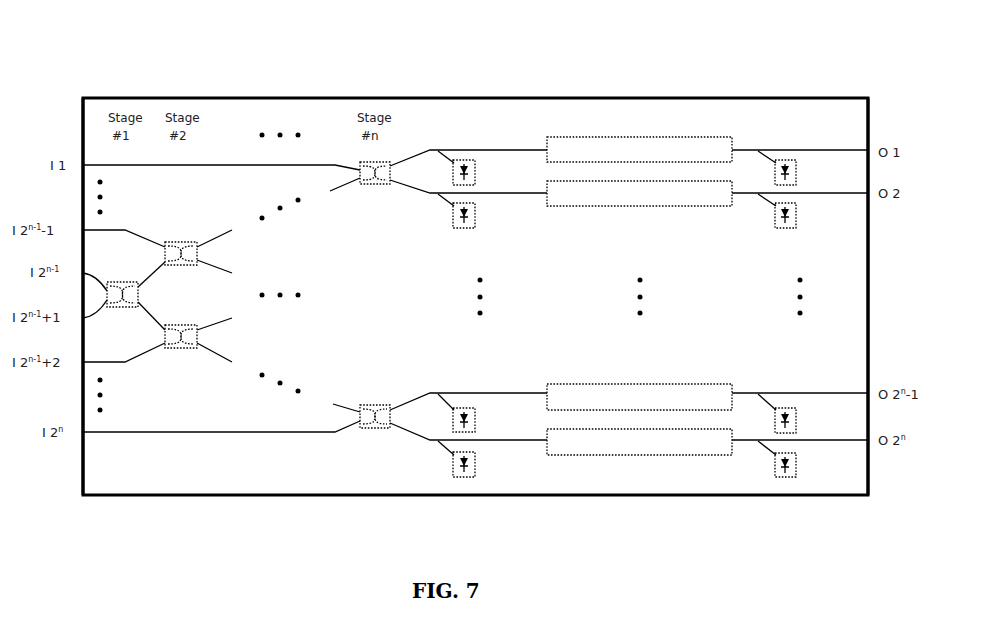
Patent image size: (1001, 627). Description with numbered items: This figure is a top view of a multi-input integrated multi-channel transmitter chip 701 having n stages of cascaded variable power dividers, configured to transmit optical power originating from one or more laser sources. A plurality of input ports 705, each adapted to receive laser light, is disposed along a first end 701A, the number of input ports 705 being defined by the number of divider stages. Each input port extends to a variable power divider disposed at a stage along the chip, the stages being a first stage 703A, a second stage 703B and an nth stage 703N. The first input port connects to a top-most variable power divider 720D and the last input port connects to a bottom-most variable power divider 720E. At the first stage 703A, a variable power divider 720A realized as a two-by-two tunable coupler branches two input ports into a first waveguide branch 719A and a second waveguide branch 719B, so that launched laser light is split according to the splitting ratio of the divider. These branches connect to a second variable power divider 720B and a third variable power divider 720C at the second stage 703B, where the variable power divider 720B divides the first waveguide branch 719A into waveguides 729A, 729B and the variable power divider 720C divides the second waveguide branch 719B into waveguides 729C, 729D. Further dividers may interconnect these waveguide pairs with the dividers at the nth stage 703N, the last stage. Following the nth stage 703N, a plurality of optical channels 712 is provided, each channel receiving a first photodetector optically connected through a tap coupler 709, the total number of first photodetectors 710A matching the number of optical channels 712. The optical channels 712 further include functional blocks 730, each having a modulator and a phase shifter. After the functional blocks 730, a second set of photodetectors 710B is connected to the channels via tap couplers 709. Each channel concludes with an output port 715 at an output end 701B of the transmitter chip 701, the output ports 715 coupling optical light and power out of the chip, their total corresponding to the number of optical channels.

The integrated multi-channel transmitter chip 701 is at (859, 126).
The first end 701A is at (89, 70).
The output end 701B is at (866, 68).
The input ports 705 is at (33, 475).
The output ports 715 is at (872, 472).
The Stage #1 703A is at (118, 300).
The Stage #2 703B is at (201, 305).
The Stage #n 703N is at (374, 417).
The variable power divider 720A is at (120, 282).
The second variable power divider 720B is at (180, 242).
The third variable power divider 720C is at (193, 325).
The top-most variable power divider 720D is at (370, 185).
The bottom-most variable power divider 720E is at (376, 404).
The first waveguide branch 719A is at (157, 277).
The second waveguide branch 719B is at (154, 318).
The waveguide 729A is at (214, 239).
The waveguide 729B is at (224, 270).
The waveguide 729C is at (230, 323).
The waveguide 729D is at (230, 363).
The optical channels 712 is at (472, 143).
The tap coupler 709 is at (448, 201).
The first photodetectors 710A is at (453, 500).
The second photodetectors 710B is at (777, 501).
The functional blocks 730 is at (545, 452).